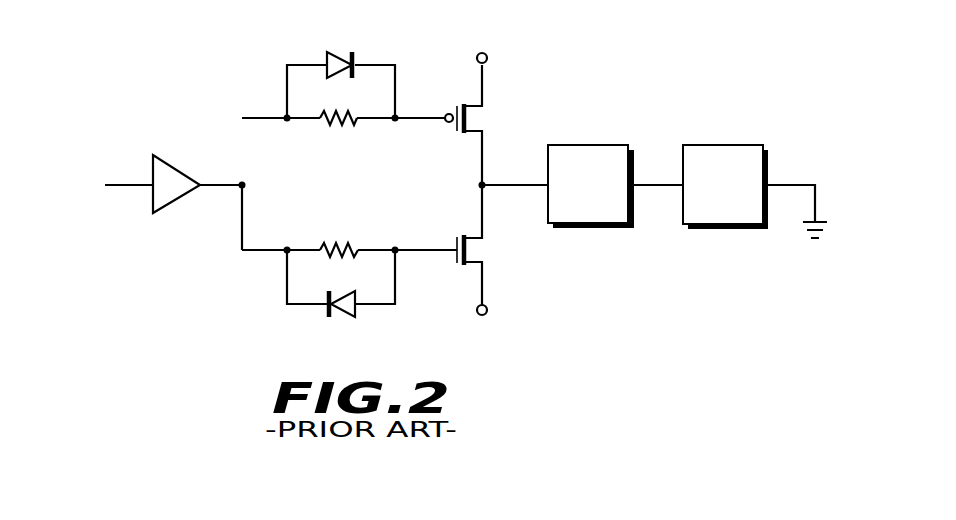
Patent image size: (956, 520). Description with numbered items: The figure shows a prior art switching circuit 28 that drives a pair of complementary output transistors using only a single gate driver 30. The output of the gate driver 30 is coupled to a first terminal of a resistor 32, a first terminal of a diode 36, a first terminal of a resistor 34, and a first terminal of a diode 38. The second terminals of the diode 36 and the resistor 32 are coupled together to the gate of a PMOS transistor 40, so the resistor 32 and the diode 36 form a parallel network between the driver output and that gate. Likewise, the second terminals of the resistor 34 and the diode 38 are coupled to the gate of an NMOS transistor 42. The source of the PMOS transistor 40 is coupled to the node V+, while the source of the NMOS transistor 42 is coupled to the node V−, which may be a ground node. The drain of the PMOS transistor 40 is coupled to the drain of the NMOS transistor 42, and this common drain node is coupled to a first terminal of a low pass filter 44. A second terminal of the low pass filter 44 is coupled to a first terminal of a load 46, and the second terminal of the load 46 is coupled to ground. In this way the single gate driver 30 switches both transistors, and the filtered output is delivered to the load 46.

The switching circuit 28 is at (738, 65).
The gate driver 30 is at (177, 166).
The resistor 32 is at (344, 124).
The resistor 34 is at (338, 244).
The diode 36 is at (355, 58).
The diode 38 is at (328, 314).
The PMOS transistor 40 is at (455, 130).
The NMOS transistor 42 is at (458, 237).
The low pass filter 44 is at (605, 142).
The load 46 is at (734, 143).